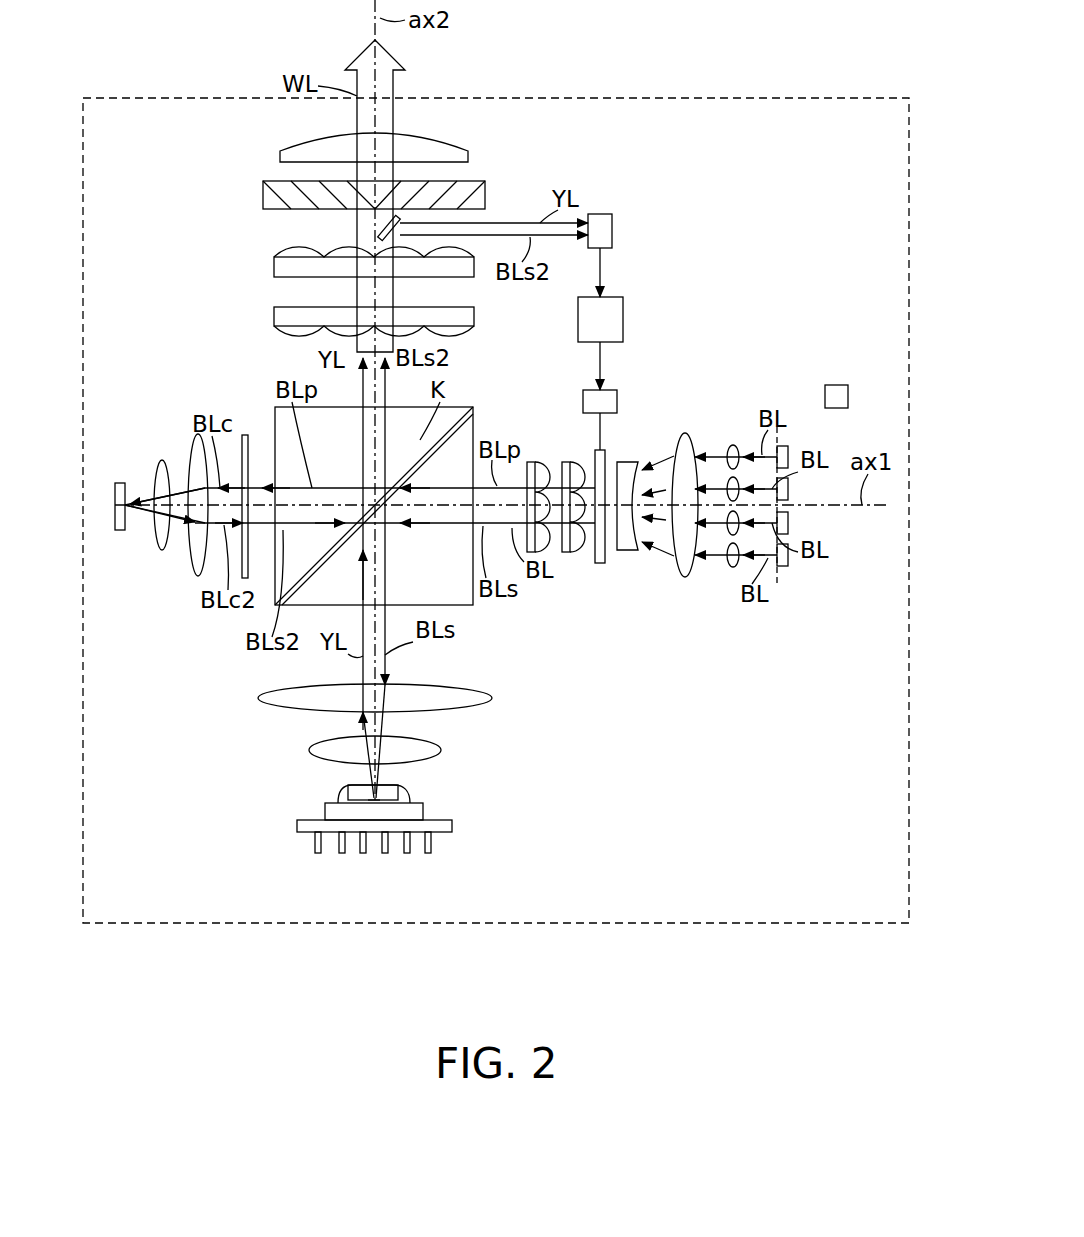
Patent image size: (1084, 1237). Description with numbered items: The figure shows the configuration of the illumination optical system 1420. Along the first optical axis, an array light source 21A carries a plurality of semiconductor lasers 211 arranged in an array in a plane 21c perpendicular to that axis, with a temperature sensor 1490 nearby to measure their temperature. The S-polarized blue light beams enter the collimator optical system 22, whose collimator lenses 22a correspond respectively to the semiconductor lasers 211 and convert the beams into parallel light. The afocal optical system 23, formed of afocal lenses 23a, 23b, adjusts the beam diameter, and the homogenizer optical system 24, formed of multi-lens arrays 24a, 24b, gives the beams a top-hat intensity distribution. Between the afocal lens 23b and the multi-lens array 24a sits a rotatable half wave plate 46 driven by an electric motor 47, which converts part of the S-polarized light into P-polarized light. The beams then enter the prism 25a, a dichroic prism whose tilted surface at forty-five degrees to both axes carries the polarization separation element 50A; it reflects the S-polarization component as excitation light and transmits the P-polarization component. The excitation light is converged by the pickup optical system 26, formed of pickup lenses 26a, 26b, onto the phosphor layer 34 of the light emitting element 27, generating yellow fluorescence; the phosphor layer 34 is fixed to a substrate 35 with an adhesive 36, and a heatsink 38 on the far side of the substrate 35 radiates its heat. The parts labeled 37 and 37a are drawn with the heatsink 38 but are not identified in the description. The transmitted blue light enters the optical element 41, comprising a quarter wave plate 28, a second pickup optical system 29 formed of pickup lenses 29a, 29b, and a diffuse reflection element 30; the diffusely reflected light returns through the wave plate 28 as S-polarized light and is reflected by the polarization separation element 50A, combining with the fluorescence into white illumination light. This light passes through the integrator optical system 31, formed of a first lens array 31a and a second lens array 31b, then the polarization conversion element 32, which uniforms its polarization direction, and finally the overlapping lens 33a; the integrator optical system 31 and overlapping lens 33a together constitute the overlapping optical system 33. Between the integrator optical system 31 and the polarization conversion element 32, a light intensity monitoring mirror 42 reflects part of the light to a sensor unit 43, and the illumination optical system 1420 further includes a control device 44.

The illumination optical system 1420 is at (752, 98).
The overlapping optical system 33 is at (236, 222).
The overlapping lens 33a is at (445, 152).
The polarization conversion element 32 is at (485, 193).
The integrator optical system 31 is at (200, 245).
The first lens array 31a is at (274, 317).
The second lens array 31b is at (274, 267).
The light intensity monitoring mirror 42 is at (376, 232).
The sensor unit 43 is at (612, 232).
The control device 44 is at (623, 318).
The electric motor 47 is at (590, 390).
The wave plate 46 is at (600, 563).
The polarization separation element 50A is at (445, 420).
The prism 25a is at (473, 606).
The wave plate 28 is at (245, 435).
The optical element 41 is at (262, 612).
The second pickup optical system 29 is at (195, 440).
The pickup lens 29a is at (196, 572).
The pickup lens 29b is at (160, 548).
The diffuse reflection element 30 is at (120, 483).
The homogenizer optical system 24 is at (578, 410).
The multi-lens array 24a is at (566, 462).
The multi-lens array 24b is at (531, 462).
The afocal optical system 23 is at (715, 382).
The afocal lens 23a is at (686, 433).
The afocal lens 23b is at (628, 462).
The collimator optical system 22 is at (745, 440).
The collimator lens 22a is at (733, 446).
The array light source 21A is at (795, 440).
The semiconductor laser 211 is at (790, 452).
The plane 21c is at (777, 587).
The temperature sensor 1490 is at (838, 385).
The pickup optical system 26 is at (562, 672).
The pickup lens 26a is at (480, 690).
The pickup lens 26b is at (440, 748).
The light emitting element 27 is at (463, 818).
The phosphor layer 34 is at (350, 788).
The substrate 35 is at (325, 808).
The adhesive 36 is at (410, 795).
The heat sink 37 is at (384, 812).
The heat sink base 37a is at (375, 805).
The heatsink 38 is at (297, 826).